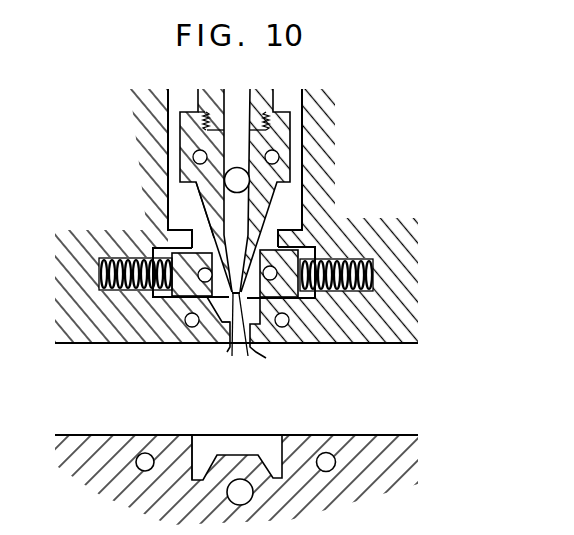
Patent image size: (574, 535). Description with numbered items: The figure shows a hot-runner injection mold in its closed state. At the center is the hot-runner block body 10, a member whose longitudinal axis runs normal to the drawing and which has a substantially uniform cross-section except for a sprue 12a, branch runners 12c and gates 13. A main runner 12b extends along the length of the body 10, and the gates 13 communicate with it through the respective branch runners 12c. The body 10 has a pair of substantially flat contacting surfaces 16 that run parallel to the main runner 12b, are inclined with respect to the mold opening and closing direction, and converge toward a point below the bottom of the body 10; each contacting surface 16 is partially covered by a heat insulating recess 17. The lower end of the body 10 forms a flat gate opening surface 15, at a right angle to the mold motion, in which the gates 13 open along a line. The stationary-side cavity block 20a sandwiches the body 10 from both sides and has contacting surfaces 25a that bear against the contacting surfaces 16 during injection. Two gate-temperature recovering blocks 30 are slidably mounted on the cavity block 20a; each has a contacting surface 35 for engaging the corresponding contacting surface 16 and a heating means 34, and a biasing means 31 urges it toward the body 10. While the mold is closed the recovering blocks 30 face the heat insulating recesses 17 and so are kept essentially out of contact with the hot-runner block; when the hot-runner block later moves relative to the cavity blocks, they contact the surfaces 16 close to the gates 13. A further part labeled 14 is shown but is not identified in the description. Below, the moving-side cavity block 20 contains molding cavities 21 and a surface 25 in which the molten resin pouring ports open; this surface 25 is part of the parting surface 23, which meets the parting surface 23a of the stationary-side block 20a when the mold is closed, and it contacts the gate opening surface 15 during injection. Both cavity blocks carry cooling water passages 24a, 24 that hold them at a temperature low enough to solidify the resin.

The hot-runner block body 10 is at (186, 128).
The sprue 12a is at (237, 102).
The main runner 12b is at (247, 168).
The branch runners 12c is at (234, 204).
The gates 13 is at (249, 337).
The left nozzle body block 14 is at (193, 156).
The gate opening surface 15 is at (197, 330).
The contacting surfaces 16 is at (268, 212).
The heat insulating recess 17 is at (207, 224).
The moving-side cavity block 20 is at (395, 464).
The stationary-side cavity block 20a is at (388, 277).
The molding cavities 21 is at (215, 452).
The parting surface 23 is at (373, 435).
The parting surface 23a is at (390, 344).
The cooling water passage 24 is at (323, 453).
The cooling water conduit 24a is at (186, 322).
The contacting surface 25 is at (240, 434).
The contacting surfaces 25a is at (213, 348).
The gate-temperature recovering blocks 30 is at (288, 250).
The biasing means 31 is at (358, 260).
The heating means 34 is at (160, 233).
The contacting surface 35 is at (272, 336).